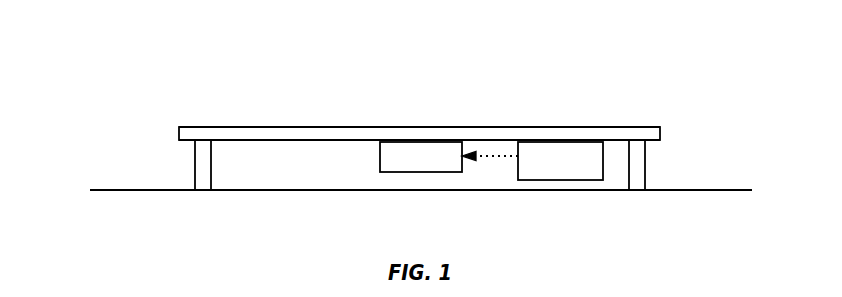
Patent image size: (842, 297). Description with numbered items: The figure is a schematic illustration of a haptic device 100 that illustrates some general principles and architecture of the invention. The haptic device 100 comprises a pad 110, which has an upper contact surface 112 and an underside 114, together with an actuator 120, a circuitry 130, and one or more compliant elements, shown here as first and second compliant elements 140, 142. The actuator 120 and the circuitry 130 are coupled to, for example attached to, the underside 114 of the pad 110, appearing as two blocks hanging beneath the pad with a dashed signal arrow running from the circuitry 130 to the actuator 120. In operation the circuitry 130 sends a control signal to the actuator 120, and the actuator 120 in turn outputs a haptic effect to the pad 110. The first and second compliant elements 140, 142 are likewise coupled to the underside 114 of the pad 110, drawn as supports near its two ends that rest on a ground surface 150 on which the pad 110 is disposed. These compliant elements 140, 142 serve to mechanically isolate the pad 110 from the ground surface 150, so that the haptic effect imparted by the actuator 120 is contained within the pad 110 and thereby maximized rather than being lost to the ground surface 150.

The haptic device 100 is at (200, 61).
The pad 110 is at (499, 123).
The contact surface 112 is at (303, 125).
The underside 114 is at (303, 143).
The actuator 120 is at (420, 173).
The circuitry 130 is at (560, 181).
The first compliant element 140 is at (195, 180).
The second compliant element 142 is at (645, 178).
The ground surface 150 is at (143, 191).